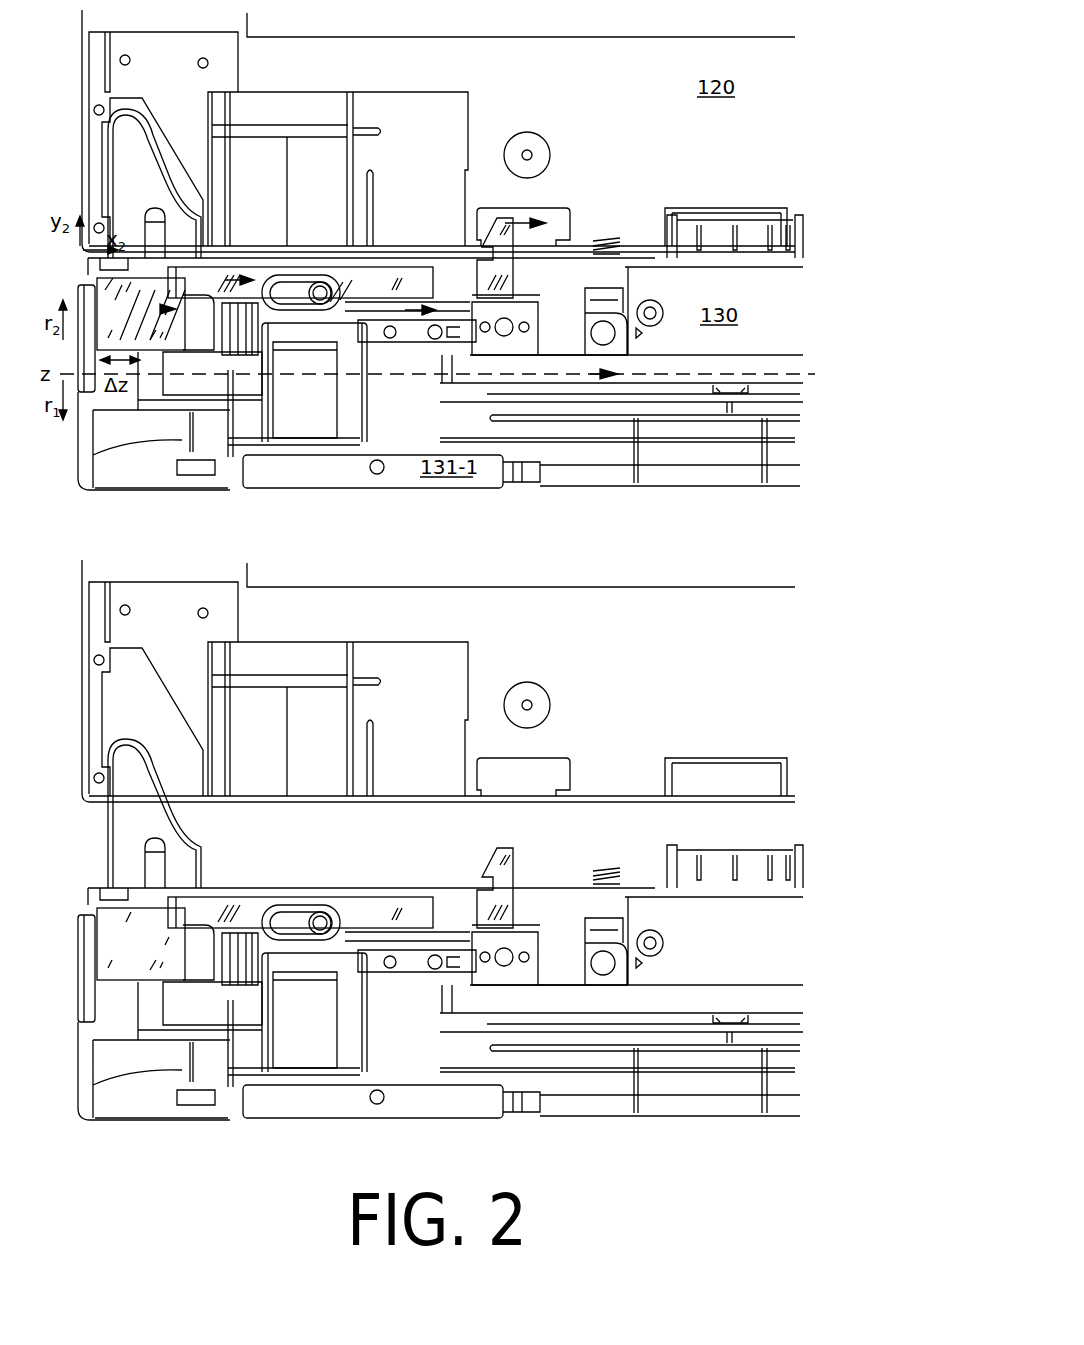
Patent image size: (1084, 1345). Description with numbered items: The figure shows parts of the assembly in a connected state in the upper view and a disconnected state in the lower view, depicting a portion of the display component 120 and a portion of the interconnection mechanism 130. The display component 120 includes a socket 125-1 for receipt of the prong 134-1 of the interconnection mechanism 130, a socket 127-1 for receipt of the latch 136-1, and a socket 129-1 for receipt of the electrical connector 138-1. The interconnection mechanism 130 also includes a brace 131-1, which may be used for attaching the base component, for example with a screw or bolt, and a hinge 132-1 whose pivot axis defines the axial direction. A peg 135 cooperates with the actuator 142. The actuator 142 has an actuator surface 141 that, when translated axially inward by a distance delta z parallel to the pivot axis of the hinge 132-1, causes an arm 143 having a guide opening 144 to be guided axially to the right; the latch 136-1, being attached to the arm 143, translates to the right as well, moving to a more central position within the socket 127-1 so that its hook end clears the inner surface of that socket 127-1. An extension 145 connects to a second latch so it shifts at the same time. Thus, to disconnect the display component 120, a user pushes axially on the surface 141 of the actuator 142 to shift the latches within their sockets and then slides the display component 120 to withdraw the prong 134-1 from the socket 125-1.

The display component 120 is at (745, 683).
The socket 125-1 is at (165, 728).
The socket 127-1 is at (545, 786).
The socket 129-1 is at (753, 790).
The interconnection mechanism 130 is at (748, 954).
The brace 131-1 is at (468, 1109).
The hinge 132-1 is at (299, 1016).
The prong 134-1 is at (197, 848).
The peg 135 is at (320, 918).
The latch 136-1 is at (481, 863).
The electrical connector 138-1 is at (713, 850).
The actuator surface 141 is at (77, 927).
The actuator 142 is at (160, 955).
The arm 143 is at (257, 900).
The guide opening 144 is at (302, 905).
The extension 145 is at (749, 1014).